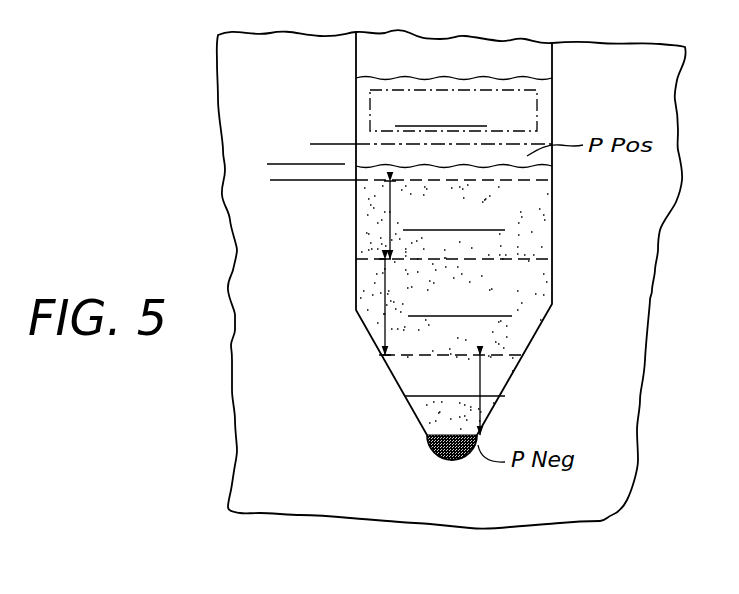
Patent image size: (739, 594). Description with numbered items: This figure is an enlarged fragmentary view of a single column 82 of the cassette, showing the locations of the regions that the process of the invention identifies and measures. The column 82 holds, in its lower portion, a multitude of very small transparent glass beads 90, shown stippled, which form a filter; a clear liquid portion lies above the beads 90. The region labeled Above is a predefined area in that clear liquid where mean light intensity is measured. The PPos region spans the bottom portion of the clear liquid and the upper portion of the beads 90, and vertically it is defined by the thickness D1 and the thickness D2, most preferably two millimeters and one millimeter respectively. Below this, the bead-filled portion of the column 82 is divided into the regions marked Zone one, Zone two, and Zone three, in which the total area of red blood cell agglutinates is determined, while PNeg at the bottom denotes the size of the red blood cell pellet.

The column 82 is at (355, 305).
The glass beads 90 is at (540, 210).
The thickness D1 is at (321, 197).
The thickness D2 is at (280, 133).